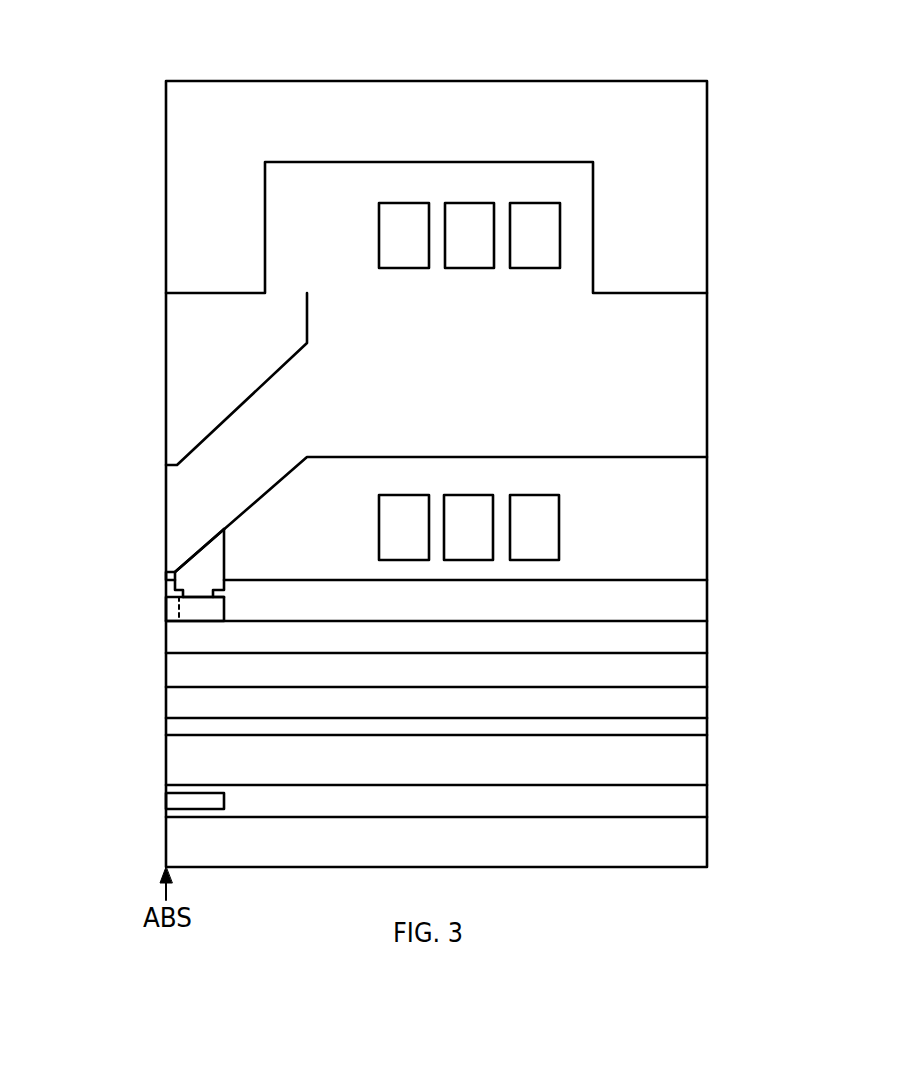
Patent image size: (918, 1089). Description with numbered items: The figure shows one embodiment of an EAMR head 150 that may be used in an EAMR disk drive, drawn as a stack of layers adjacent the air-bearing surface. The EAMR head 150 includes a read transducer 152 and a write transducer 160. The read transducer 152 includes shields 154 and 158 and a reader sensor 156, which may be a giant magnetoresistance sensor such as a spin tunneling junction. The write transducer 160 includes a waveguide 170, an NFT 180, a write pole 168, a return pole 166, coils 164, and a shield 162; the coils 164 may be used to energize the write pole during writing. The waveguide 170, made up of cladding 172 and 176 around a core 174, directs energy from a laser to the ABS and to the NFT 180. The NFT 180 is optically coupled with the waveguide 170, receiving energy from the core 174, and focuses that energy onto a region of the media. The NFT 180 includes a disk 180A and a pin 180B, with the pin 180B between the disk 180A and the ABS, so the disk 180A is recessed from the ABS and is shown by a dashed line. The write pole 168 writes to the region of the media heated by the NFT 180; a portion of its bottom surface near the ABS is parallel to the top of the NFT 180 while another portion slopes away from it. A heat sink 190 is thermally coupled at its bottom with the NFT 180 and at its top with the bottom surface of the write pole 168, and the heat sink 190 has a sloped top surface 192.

The EAMR head 150 is at (448, 59).
The read transducer 152 is at (723, 735).
The shield 154 is at (165, 860).
The reader sensor 156 is at (203, 809).
The shield 158 is at (592, 785).
The write transducer 160 is at (755, 81).
The shield 162 is at (708, 703).
The coils 164 is at (577, 523).
The return pole 166 is at (166, 260).
The write pole 168 is at (708, 360).
The waveguide 170 is at (86, 679).
The cladding 172 is at (166, 668).
The core 174 is at (708, 643).
The cladding 176 is at (708, 595).
The NFT 180 is at (120, 615).
The disk 180A is at (200, 622).
The pin 180B is at (165, 605).
The heat sink 190 is at (165, 577).
The top surface 192 is at (193, 547).